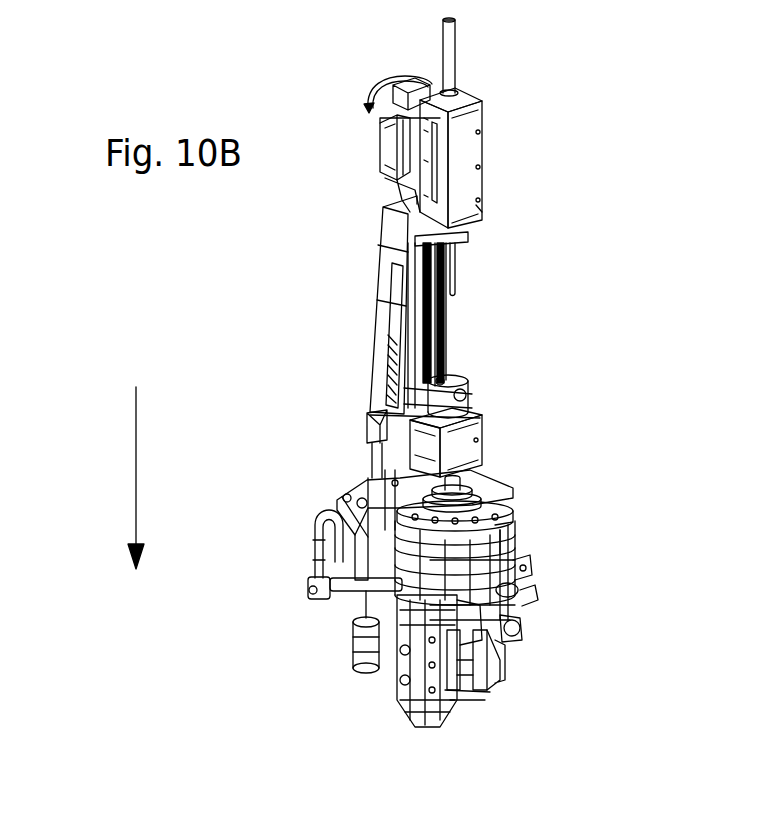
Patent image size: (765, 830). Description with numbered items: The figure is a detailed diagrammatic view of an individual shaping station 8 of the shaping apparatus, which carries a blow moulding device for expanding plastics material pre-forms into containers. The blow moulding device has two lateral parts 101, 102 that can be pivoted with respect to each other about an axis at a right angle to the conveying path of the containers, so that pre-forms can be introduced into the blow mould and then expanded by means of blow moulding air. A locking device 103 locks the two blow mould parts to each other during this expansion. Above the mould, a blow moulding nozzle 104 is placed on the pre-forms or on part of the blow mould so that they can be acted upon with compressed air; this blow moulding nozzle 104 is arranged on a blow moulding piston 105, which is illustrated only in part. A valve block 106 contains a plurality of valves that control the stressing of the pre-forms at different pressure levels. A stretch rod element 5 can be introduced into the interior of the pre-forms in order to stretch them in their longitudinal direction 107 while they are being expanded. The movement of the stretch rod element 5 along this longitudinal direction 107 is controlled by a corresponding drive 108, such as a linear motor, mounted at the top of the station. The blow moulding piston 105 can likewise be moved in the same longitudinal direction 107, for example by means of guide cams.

The stretch rod element 5 is at (452, 343).
The shaping station 8 is at (532, 265).
The lateral part 101 is at (392, 622).
The lateral part 102 is at (510, 517).
The locking device 103 is at (507, 566).
The blow moulding nozzle 104 is at (443, 497).
The blow moulding piston 105 is at (443, 488).
The valve block 106 is at (463, 443).
The longitudinal direction 107 is at (134, 475).
The drive 108 is at (465, 148).